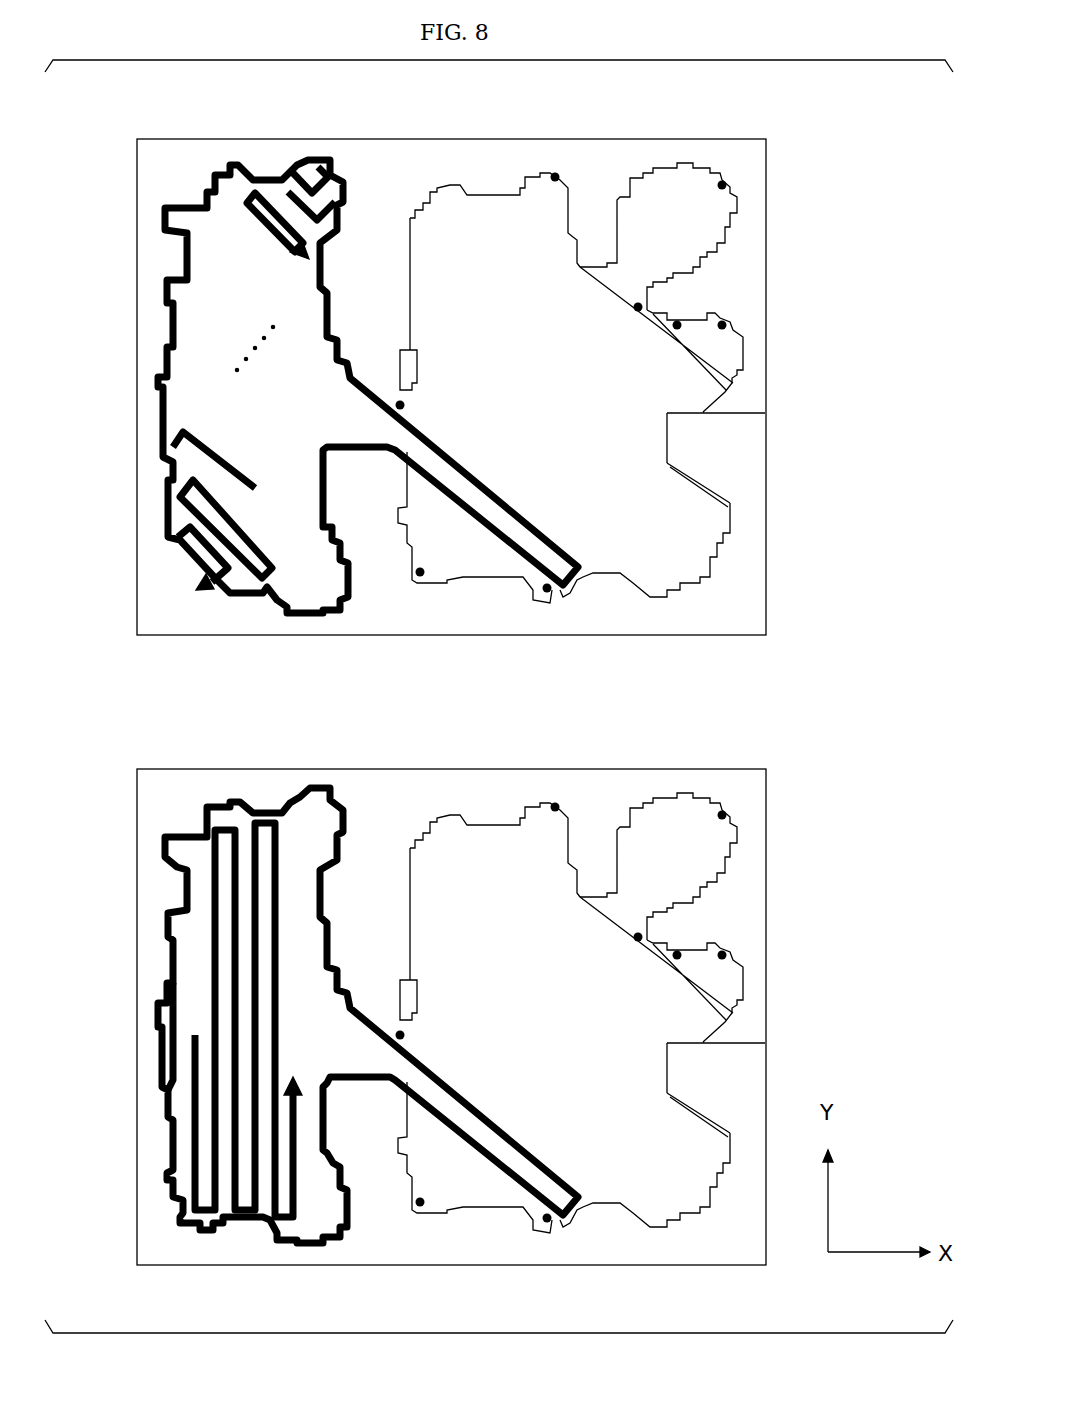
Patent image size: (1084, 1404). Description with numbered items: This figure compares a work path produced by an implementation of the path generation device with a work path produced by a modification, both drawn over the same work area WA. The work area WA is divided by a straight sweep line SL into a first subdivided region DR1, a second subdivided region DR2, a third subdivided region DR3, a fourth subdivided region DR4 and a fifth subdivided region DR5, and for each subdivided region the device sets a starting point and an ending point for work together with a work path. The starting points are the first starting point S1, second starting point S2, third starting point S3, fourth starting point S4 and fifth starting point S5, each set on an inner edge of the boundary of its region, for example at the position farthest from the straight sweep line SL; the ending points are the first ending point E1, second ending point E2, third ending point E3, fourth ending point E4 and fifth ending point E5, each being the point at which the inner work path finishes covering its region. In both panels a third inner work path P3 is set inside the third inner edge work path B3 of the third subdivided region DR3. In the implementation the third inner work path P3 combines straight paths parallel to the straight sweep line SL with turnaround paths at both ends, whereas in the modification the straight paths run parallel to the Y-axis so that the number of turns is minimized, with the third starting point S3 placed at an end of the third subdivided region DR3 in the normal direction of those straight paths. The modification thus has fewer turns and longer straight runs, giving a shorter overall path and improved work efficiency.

The work area WA is at (688, 165).
The first subdivided region DR1 is at (658, 551).
The second subdivided region DR2 is at (564, 703).
The third subdivided region DR3 is at (368, 701).
The fourth subdivided region DR4 is at (439, 1177).
The fifth subdivided region DR5 is at (727, 353).
The straight sweep line SL is at (433, 443).
The third inner work path P3 is at (207, 443).
The third inner edge work path B3 is at (183, 230).
The first starting point S1 is at (725, 182).
The second starting point S2 is at (555, 172).
The third starting point S3 is at (318, 150).
The fourth starting point S4 is at (548, 595).
The fifth starting point S5 is at (727, 323).
The first ending point E1 is at (638, 302).
The second ending point E2 is at (400, 400).
The third ending point E3 is at (180, 588).
The fourth ending point E4 is at (418, 578).
The fifth ending point E5 is at (680, 322).